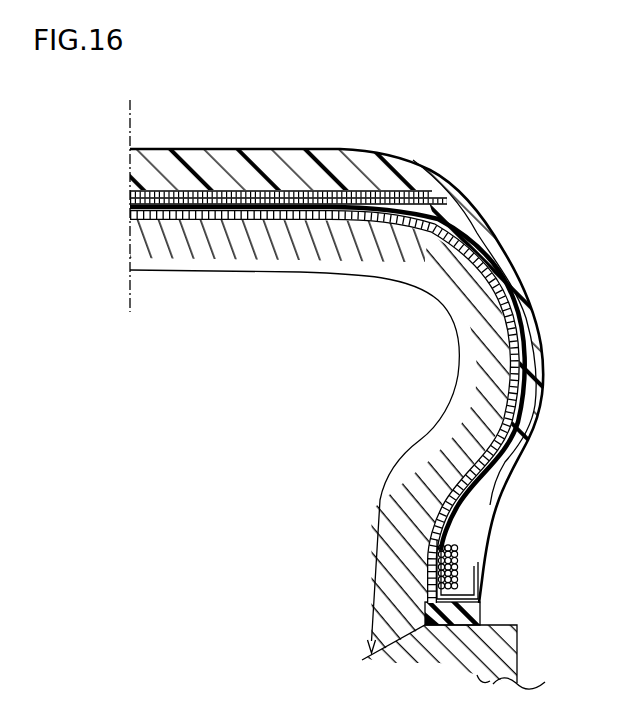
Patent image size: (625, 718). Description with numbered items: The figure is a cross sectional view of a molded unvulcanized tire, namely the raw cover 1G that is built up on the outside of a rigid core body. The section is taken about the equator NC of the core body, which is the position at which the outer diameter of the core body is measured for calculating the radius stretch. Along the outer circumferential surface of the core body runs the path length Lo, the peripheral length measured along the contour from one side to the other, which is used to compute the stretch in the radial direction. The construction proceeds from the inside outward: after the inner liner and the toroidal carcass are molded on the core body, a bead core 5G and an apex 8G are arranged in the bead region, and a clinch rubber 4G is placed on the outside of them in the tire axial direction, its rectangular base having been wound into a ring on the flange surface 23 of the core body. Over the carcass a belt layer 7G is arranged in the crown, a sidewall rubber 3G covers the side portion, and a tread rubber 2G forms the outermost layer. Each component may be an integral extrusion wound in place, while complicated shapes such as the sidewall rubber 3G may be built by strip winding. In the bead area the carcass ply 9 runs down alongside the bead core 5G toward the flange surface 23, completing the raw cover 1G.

The raw cover 1G is at (452, 154).
The tread rubber 2G is at (333, 163).
The sidewall rubber 3G is at (487, 238).
The clinch rubber 4G is at (478, 572).
The bead core 5G is at (452, 546).
The belt layer 7G is at (130, 200).
The apex 8G is at (473, 519).
The carcass ply 9 is at (513, 370).
The flange surface 23 is at (493, 625).
The equator of core body NC is at (128, 117).
The path length of the outer circumferential surface of core body Lo is at (92, 262).